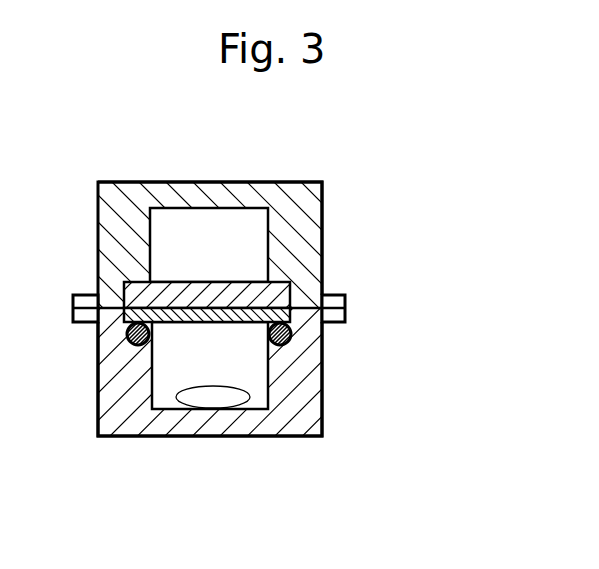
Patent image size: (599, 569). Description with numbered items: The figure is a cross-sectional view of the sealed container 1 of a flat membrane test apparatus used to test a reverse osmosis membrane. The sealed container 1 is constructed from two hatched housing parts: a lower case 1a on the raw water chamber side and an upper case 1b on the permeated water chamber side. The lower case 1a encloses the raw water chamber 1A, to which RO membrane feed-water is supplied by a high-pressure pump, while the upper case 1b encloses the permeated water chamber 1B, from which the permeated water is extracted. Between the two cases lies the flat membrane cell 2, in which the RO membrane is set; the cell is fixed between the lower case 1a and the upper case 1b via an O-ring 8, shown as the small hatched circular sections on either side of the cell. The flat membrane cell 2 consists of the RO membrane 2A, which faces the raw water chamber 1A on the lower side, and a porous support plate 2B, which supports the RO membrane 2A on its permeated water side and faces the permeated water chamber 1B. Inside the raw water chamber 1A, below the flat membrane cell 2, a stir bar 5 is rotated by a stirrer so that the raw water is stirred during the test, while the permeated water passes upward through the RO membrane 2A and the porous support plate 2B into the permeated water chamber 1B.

The sealed container 1 is at (222, 152).
The lower case 1a is at (322, 413).
The upper case 1b is at (310, 229).
The raw water chamber 1A is at (229, 372).
The permeated water chamber 1B is at (229, 259).
The flat membrane cell 2 is at (428, 308).
The RO membrane 2A is at (300, 323).
The porous support plate 2B is at (295, 285).
The stir bar 5 is at (228, 397).
The O-ring 8 is at (127, 333).